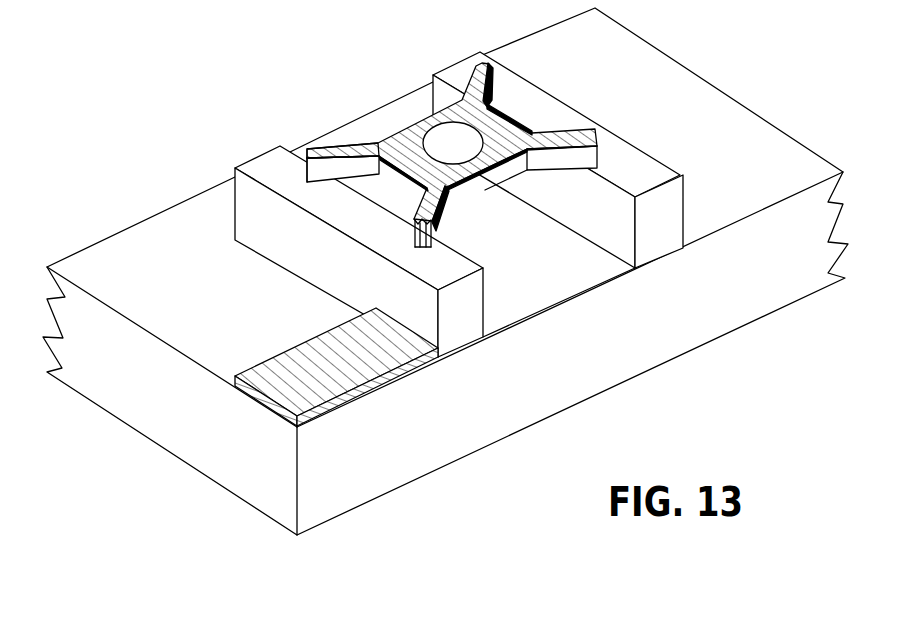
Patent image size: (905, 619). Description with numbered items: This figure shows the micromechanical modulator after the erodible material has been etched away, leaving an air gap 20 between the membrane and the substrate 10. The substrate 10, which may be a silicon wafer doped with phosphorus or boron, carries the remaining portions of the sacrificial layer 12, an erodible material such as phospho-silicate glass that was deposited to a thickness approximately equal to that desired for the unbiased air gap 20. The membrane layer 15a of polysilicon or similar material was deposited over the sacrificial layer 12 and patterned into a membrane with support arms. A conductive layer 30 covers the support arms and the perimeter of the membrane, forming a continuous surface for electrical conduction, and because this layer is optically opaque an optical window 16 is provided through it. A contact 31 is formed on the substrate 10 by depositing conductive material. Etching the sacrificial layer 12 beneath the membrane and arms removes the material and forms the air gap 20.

The substrate 10 is at (140, 430).
The sacrificial layer 12 is at (234, 224).
The membrane layer 15a is at (306, 162).
The optical window 16 is at (438, 140).
The air gap 20 is at (541, 274).
The conductive layer 30 is at (451, 151).
The contact 31 is at (285, 367).